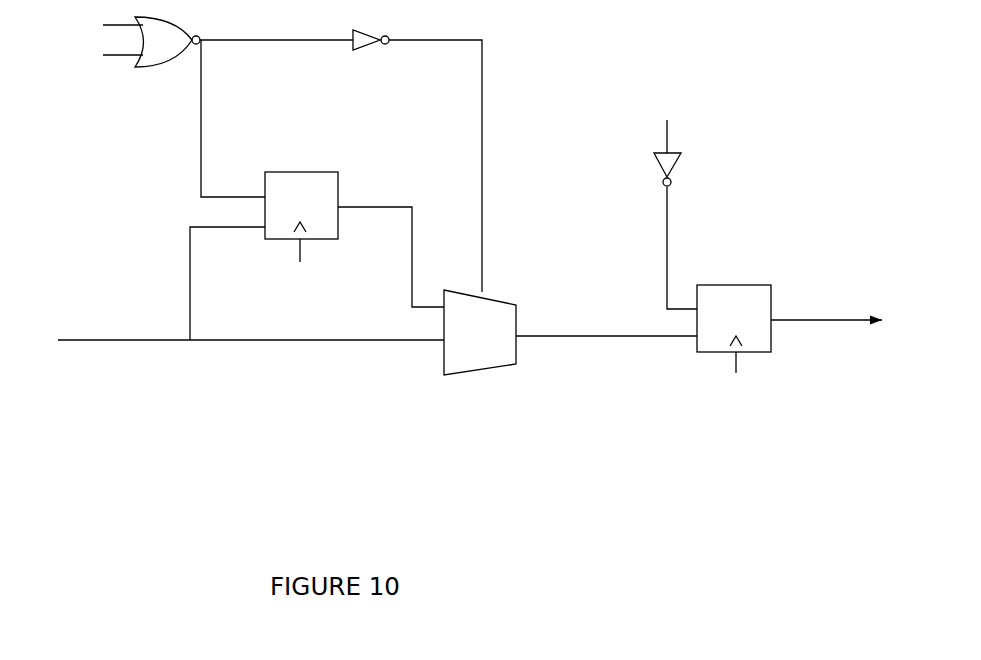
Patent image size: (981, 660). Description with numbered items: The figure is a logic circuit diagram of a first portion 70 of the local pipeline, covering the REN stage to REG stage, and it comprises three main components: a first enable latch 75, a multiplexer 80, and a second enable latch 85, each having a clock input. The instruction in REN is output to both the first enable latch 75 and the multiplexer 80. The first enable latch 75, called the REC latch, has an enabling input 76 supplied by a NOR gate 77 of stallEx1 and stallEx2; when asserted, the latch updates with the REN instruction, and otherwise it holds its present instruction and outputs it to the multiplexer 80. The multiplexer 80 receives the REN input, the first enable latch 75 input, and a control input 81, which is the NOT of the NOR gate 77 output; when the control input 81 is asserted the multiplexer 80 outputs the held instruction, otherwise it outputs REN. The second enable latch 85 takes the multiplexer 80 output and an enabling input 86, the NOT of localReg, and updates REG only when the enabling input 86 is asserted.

The first portion of the local pipeline 70 is at (448, 283).
The first enable latch 75 is at (323, 173).
The enabling input 76 is at (260, 193).
The NOR gate 77 is at (135, 72).
The multiplexer 80 is at (450, 376).
The control input 81 is at (483, 290).
The second enable latch 85 is at (748, 282).
The enabling input 86 is at (665, 308).